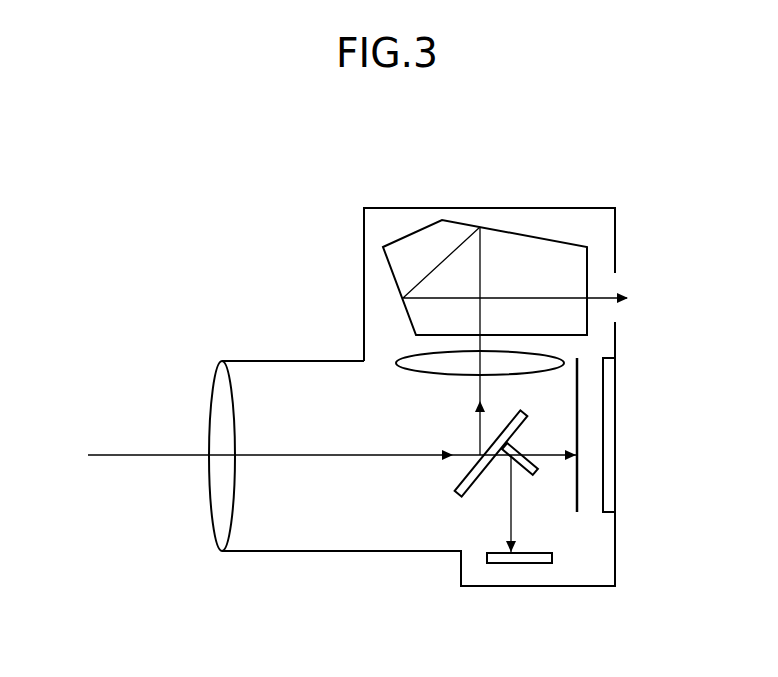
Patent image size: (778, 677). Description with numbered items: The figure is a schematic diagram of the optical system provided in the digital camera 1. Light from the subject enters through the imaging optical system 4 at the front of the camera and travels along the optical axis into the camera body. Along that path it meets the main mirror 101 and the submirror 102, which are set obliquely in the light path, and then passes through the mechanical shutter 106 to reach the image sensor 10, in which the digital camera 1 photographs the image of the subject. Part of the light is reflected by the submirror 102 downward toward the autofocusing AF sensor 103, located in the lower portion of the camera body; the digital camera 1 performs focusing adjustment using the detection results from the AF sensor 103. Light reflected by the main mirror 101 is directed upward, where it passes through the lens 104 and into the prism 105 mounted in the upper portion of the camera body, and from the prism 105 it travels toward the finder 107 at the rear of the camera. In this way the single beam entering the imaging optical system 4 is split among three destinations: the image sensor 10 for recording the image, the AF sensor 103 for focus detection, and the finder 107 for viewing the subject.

The digital camera 1 is at (376, 185).
The imaging optical system 4 is at (222, 413).
The image sensor 10 is at (610, 443).
The main mirror 101 is at (456, 477).
The submirror 102 is at (533, 474).
The AF sensor 103 is at (502, 564).
The lens 104 is at (396, 363).
The prism 105 is at (517, 242).
The mechanical shutter 106 is at (578, 508).
The finder 107 is at (616, 322).